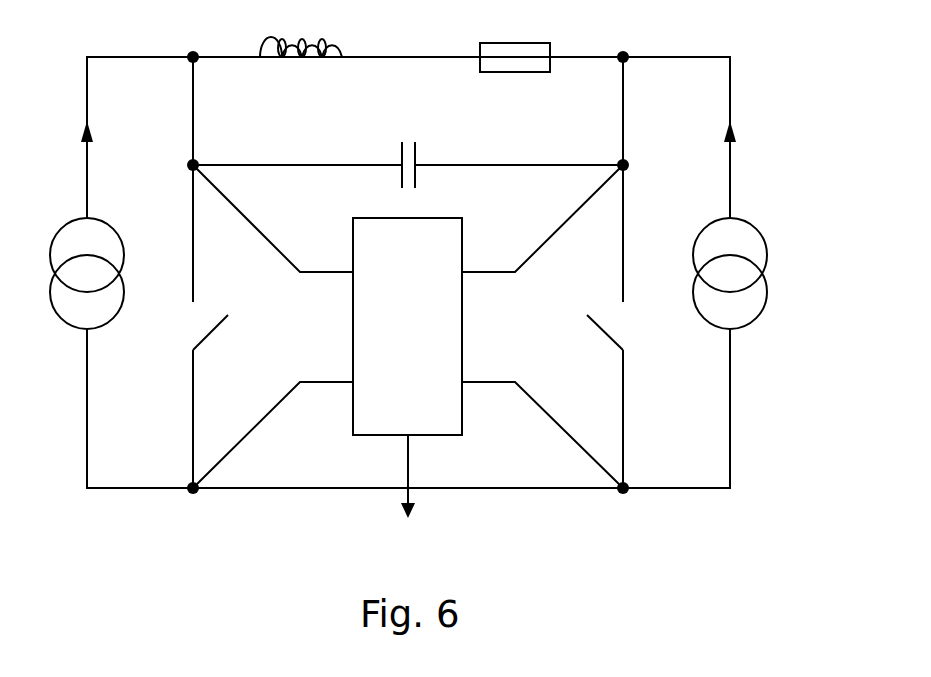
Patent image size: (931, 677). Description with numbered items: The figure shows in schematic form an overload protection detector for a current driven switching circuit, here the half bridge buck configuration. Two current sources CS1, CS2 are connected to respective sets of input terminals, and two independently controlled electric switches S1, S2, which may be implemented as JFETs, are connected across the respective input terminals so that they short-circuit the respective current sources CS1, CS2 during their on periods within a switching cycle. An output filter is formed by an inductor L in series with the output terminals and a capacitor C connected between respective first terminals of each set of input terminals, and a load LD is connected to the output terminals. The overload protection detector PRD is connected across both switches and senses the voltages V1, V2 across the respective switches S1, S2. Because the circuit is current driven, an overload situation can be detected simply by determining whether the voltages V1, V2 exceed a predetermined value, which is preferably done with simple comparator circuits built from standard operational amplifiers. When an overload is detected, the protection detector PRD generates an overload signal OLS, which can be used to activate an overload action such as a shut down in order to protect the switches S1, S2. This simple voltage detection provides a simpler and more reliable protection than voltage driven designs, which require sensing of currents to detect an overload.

The inductor L is at (301, 72).
The load LD is at (503, 57).
The capacitor C is at (409, 145).
The overload protection detector PRD is at (407, 326).
The first electric switch S1 is at (237, 326).
The second electric switch S2 is at (583, 322).
The voltage across first switch V1 is at (323, 329).
The voltage across second switch V2 is at (496, 329).
The first current source CS1 is at (98, 308).
The second current source CS2 is at (745, 308).
The overload signal OLS is at (406, 498).